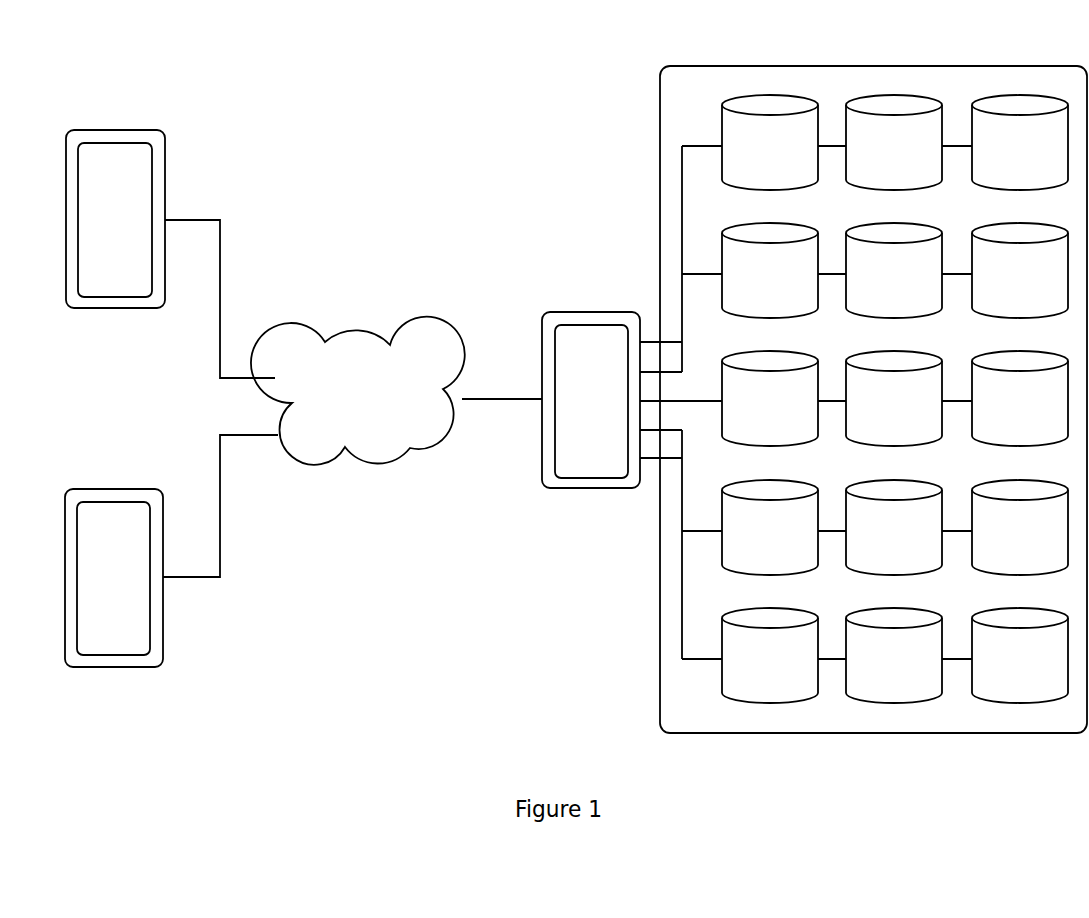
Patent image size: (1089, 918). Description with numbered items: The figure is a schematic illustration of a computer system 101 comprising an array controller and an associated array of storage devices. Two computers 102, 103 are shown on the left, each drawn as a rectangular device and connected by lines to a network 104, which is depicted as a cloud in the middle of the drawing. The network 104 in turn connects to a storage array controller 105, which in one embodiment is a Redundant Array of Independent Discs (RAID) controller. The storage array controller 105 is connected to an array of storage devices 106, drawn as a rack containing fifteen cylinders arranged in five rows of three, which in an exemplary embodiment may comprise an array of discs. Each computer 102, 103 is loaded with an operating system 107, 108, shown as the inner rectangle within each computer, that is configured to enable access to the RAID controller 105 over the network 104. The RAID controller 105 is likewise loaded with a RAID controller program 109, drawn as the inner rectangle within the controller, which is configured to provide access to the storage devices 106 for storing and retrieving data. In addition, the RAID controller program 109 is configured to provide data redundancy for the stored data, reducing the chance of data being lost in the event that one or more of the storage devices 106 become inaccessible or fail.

The computer system 101 is at (391, 126).
The computer 102 is at (115, 130).
The computer 103 is at (113, 667).
The network 104 is at (403, 462).
The storage array controller 105 is at (573, 488).
The array of storage devices 106 is at (730, 67).
The operating system 107 is at (112, 308).
The operating system 108 is at (113, 502).
The RAID controller program 109 is at (590, 325).